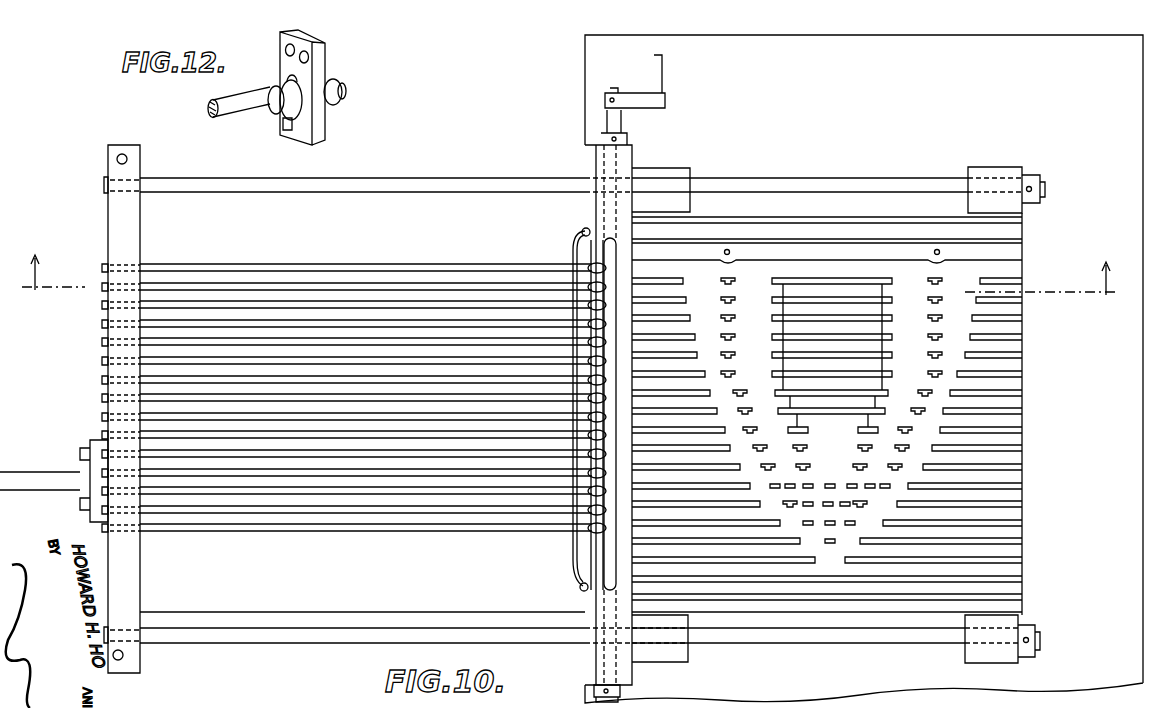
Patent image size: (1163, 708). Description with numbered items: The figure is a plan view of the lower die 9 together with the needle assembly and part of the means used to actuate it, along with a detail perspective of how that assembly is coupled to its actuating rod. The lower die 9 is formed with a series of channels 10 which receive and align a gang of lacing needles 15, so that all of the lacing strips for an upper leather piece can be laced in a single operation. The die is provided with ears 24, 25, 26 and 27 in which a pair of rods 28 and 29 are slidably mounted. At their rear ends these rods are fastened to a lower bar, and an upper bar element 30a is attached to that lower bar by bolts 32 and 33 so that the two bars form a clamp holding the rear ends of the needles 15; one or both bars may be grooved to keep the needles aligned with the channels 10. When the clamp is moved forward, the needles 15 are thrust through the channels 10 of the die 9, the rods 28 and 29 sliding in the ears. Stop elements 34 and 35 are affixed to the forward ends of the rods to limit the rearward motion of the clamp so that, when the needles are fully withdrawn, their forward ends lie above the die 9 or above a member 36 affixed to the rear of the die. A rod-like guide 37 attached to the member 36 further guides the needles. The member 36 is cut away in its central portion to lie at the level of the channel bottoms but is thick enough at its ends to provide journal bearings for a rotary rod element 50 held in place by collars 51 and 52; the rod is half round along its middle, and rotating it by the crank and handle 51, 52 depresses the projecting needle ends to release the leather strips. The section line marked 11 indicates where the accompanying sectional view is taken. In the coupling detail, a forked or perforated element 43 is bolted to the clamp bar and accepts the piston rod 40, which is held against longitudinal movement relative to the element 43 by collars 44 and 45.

In FIG. 10, the lower die 9 is at (1022, 478).
In FIG. 10, the channels 10 is at (827, 439).
In FIG. 10, the section line 11- 11 is at (570, 260).
In FIG. 10, the needles 15 is at (342, 520).
In FIG. 10, the ear 24 is at (672, 168).
In FIG. 10, the ear 25 is at (985, 167).
In FIG. 10, the ear 26 is at (672, 662).
In FIG. 10, the ear 27 is at (990, 663).
In FIG. 10, the rod 28 is at (768, 178).
In FIG. 10, the rod 29 is at (845, 658).
In FIG. 10, the upper bar element 30a is at (128, 598).
In FIG. 10, the bolt 32 is at (127, 159).
In FIG. 10, the bolt 33 is at (123, 655).
In FIG. 10, the stop element 34 is at (1030, 175).
In FIG. 10, the stop element 35 is at (1028, 625).
In FIG. 10, the member 36 is at (585, 598).
In FIG. 10, the rod-like guide 37 is at (572, 556).
In FIG. 12, the piston rod 40 is at (225, 110).
In FIG. 10, the piston rod 40 is at (22, 466).
In FIG. 12, the forked or perforated element 43 is at (325, 53).
In FIG. 12, the collar 44 is at (278, 112).
In FIG. 12, the collar 45 is at (338, 104).
In FIG. 10, the rotary rod element 50 is at (621, 118).
In FIG. 10, the collar / crank 51 is at (665, 100).
In FIG. 10, the collar / handle 52 is at (648, 692).